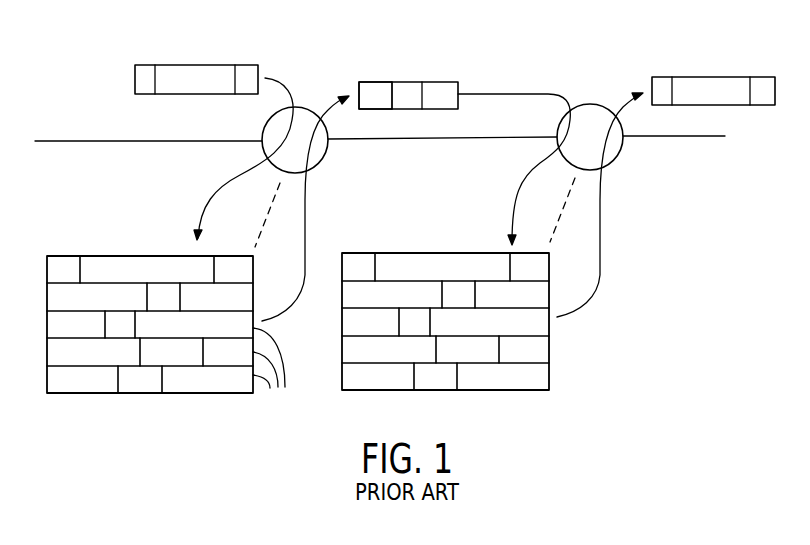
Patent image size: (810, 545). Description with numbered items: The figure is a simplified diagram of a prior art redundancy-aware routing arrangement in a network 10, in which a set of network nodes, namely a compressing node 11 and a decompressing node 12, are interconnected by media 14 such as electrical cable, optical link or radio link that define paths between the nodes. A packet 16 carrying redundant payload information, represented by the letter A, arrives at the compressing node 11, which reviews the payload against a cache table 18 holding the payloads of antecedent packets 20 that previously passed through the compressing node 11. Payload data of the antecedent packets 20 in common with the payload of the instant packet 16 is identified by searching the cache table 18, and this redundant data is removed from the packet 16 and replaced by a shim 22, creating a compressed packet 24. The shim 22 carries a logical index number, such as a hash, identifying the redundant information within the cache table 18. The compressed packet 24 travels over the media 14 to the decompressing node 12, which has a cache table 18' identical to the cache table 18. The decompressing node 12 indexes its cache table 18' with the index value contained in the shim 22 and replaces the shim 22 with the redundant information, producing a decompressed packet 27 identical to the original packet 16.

The network 10 is at (535, 48).
The compressing node 11 is at (303, 108).
The decompressing node 12 is at (617, 157).
The media 14 is at (122, 141).
The packet 16 is at (213, 65).
The cache table 18 is at (143, 310).
The cache table 18' is at (483, 264).
The antecedent packets 20 is at (301, 257).
The shim 22 is at (405, 80).
The compressed packet 24 is at (373, 80).
The decompressed packet 27 is at (662, 77).